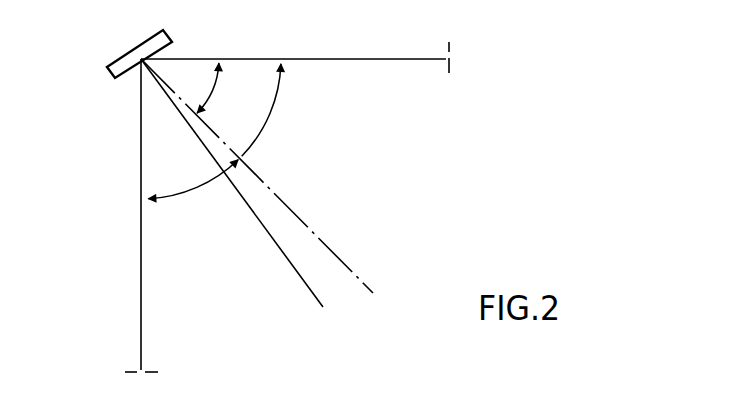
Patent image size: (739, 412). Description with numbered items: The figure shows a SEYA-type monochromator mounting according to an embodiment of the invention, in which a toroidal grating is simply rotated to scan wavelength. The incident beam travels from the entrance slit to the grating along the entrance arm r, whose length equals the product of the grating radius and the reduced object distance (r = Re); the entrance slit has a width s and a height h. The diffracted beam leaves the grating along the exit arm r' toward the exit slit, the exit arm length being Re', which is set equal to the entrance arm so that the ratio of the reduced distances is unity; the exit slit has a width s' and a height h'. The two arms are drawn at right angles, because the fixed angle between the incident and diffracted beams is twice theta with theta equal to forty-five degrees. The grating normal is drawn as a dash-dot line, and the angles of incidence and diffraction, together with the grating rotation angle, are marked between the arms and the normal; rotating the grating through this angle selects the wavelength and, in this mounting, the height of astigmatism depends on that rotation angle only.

The entrance arm length r is at (293, 44).
The entrance slit width s is at (538, 75).
The exit arm length r' is at (85, 214).
The exit slit width s' is at (230, 373).